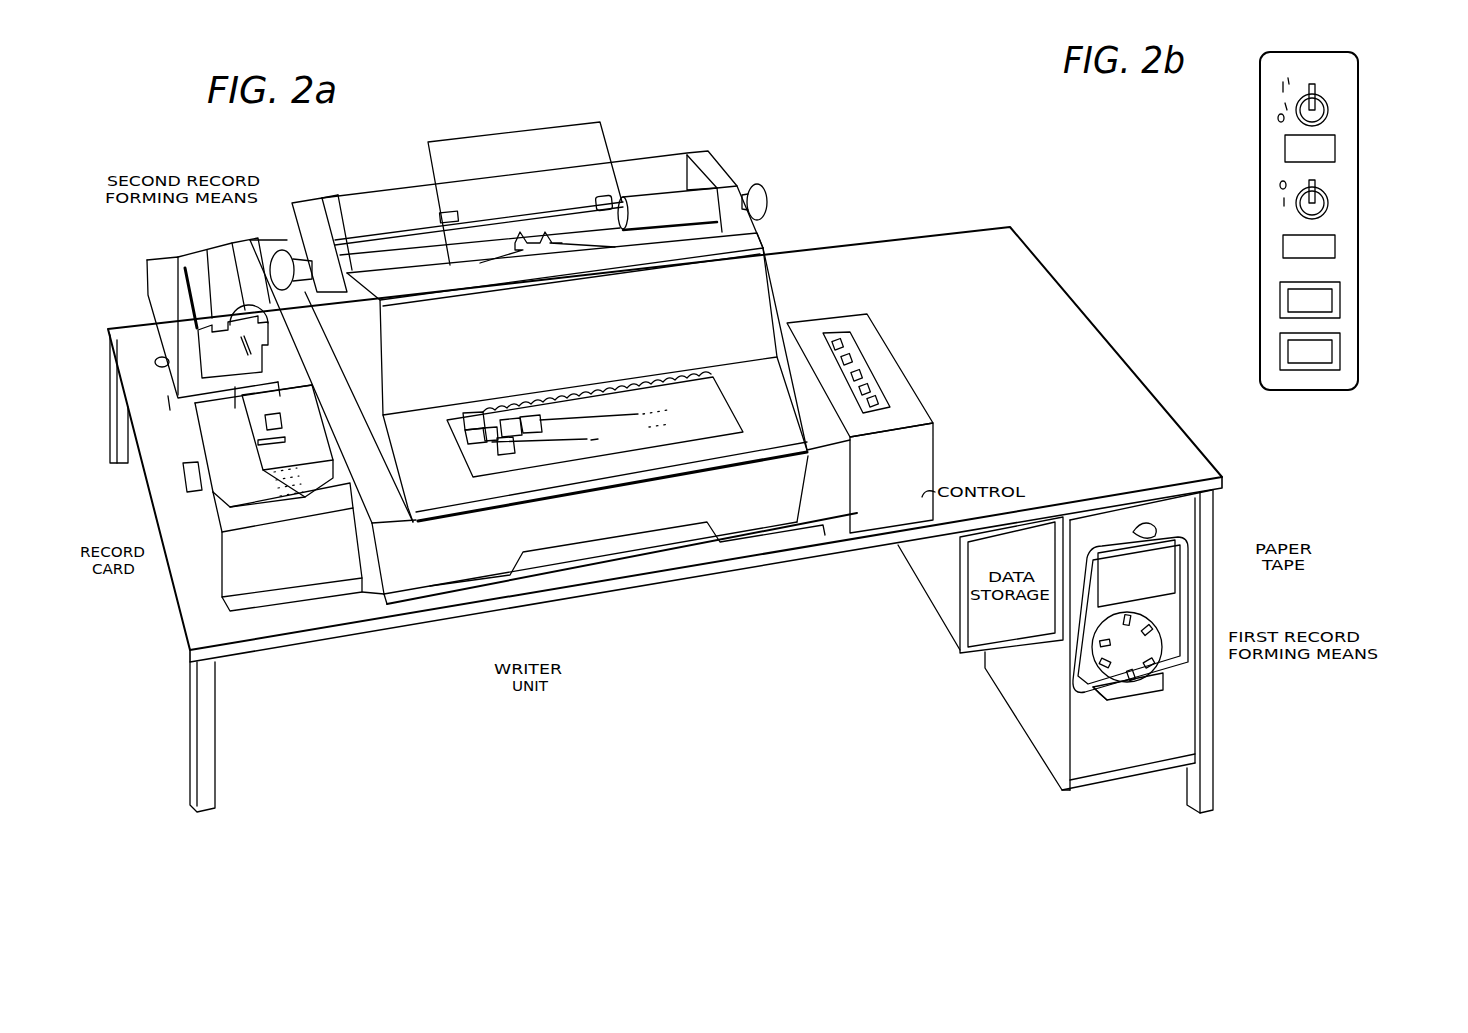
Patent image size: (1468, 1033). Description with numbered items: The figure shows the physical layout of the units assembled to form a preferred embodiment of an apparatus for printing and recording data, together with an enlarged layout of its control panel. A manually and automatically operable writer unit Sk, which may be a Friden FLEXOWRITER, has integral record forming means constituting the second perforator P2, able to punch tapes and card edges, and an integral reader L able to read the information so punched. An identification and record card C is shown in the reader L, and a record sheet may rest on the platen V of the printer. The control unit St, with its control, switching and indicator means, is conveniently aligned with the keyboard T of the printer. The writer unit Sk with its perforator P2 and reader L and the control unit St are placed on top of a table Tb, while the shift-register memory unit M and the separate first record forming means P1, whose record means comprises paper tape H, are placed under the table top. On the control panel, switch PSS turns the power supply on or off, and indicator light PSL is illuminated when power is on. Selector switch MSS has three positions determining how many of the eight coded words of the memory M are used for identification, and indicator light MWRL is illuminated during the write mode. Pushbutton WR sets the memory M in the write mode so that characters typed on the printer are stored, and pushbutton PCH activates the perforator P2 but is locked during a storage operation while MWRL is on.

In FIG. 2a, the table Tb is at (877, 238).
In FIG. 2a, the platen V is at (655, 213).
In FIG. 2a, the writer unit Sk is at (473, 580).
In FIG. 2a, the keyboard T is at (610, 443).
In FIG. 2a, the control unit St is at (920, 462).
In FIG. 2a, the reader L is at (287, 582).
In FIG. 2a, the identification and record card C is at (230, 495).
In FIG. 2a, the second perforator P2 is at (163, 262).
In FIG. 2a, the memory unit M is at (940, 586).
In FIG. 2a, the paper tape H is at (1192, 568).
In FIG. 2a, the first record forming means P1 is at (1198, 606).
In FIG. 2b, the power supply switch PSS is at (1330, 110).
In FIG. 2b, the power indicator light PSL is at (1330, 152).
In FIG. 2b, the selector switch MSS is at (1325, 210).
In FIG. 2b, the write indicator light MWRL is at (1327, 247).
In FIG. 2b, the punch pushbutton PCH is at (1325, 302).
In FIG. 2b, the write pushbutton WR is at (1325, 350).